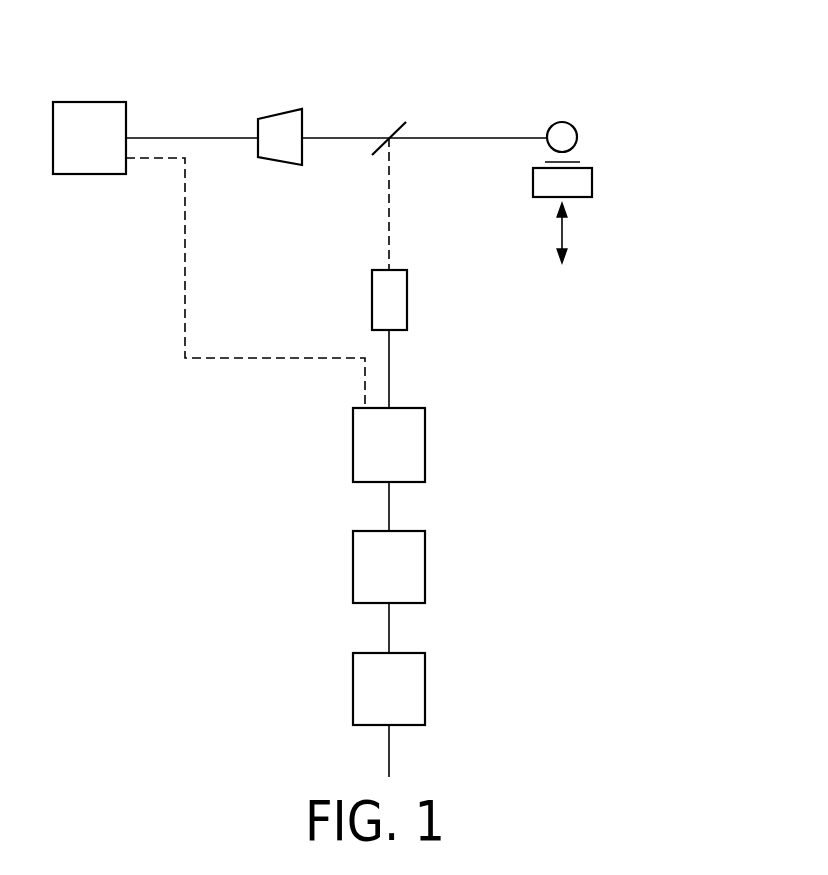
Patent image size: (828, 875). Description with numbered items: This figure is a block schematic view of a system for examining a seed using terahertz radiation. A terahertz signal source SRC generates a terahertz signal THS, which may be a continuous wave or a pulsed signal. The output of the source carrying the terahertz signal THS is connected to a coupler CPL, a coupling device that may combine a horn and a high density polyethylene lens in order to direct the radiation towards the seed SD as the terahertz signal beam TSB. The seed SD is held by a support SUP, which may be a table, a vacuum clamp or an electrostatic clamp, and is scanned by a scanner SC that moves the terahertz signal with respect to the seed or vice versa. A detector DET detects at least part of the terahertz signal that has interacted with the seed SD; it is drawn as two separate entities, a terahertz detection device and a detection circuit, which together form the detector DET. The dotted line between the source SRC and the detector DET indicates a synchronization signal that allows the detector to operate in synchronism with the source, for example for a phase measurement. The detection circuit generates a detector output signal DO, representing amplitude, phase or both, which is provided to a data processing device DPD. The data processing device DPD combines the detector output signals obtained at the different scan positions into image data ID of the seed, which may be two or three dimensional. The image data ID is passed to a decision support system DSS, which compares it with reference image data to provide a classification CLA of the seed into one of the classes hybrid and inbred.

The terahertz signal source SRC is at (91, 102).
The terahertz signal THS is at (194, 138).
The coupler CPL is at (285, 110).
The terahertz signal beam TSB is at (433, 138).
The seed SD is at (563, 122).
The support SUP is at (585, 163).
The scanner SC is at (592, 182).
The detector DET is at (407, 311).
The detector output signal DO is at (389, 508).
The data processing device DPD is at (425, 567).
The image data ID is at (389, 630).
The decision support system DSS is at (425, 688).
The classification CLA is at (389, 750).